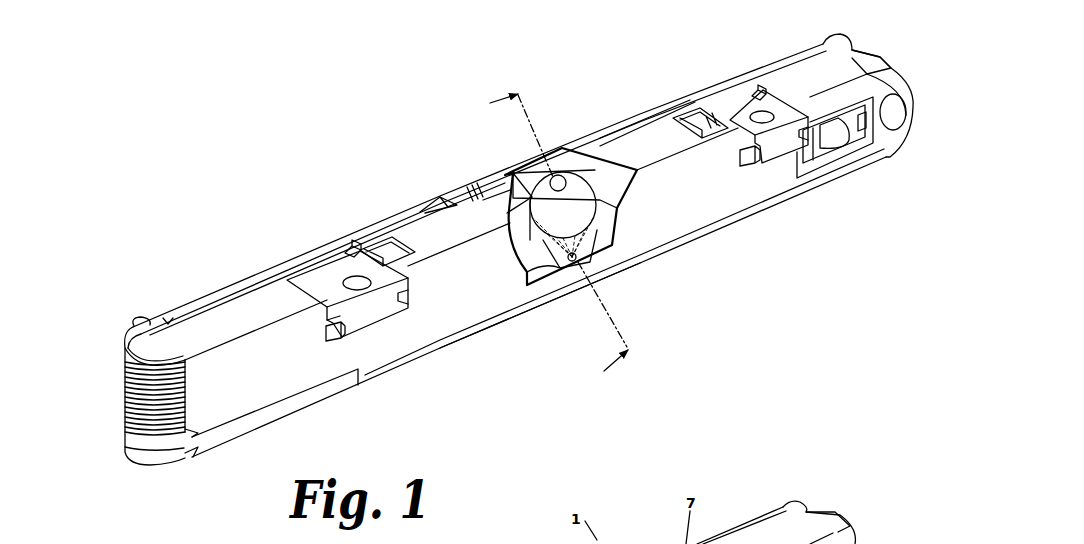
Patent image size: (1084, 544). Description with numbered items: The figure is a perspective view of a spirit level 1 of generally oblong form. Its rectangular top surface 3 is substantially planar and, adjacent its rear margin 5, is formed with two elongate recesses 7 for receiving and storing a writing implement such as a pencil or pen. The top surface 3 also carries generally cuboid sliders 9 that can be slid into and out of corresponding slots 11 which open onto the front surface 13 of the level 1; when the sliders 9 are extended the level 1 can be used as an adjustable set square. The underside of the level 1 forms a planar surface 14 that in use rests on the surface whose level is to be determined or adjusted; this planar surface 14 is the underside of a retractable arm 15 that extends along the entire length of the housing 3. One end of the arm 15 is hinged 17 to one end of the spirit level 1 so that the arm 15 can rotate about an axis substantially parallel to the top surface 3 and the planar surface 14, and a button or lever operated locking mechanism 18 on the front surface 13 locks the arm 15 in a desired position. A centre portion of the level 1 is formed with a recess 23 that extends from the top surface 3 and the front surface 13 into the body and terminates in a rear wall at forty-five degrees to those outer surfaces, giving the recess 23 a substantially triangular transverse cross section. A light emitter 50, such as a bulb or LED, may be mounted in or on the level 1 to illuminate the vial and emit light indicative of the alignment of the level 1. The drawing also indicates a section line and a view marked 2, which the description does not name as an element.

The spirit level 1 is at (650, 86).
The sight housing 2 is at (570, 273).
The top surface 3 is at (448, 230).
The rear margin 5 is at (424, 192).
The elongate recesses 7 is at (262, 283).
The sliders 9 is at (368, 313).
The slots 11 is at (328, 270).
The front surface 13 is at (662, 217).
The planar surface 14 is at (498, 334).
The retractable arm 15 is at (750, 215).
The hinge 17 is at (890, 114).
The locking mechanism 18 is at (855, 147).
The recess 23 is at (560, 178).
The light emitter 50 is at (578, 259).